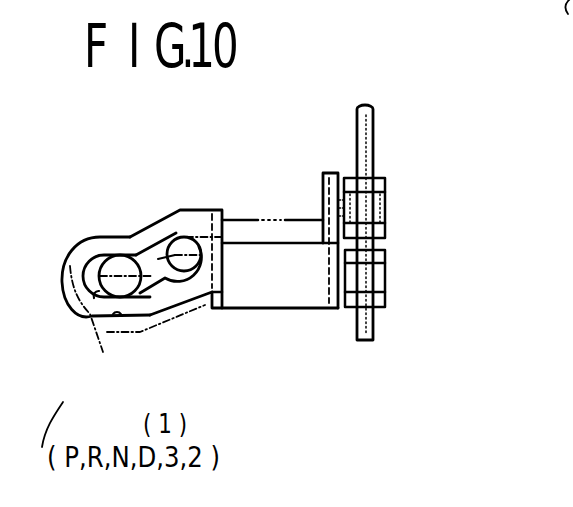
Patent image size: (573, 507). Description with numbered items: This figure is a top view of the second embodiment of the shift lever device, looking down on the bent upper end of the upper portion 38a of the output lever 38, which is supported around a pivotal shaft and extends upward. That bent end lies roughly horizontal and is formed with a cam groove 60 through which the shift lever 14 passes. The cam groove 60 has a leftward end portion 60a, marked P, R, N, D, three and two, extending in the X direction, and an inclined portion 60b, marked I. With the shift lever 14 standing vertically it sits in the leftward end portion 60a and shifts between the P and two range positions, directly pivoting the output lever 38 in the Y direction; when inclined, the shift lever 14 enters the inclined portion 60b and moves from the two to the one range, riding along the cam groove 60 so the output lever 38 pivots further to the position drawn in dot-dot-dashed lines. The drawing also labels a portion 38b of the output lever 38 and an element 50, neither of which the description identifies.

The shift lever 14 is at (172, 254).
The output lever 38 is at (290, 225).
The upper portion of the output lever 38a is at (223, 292).
The loop end of rod 38b is at (98, 236).
The pin 50 is at (365, 135).
The cam groove 60 is at (183, 247).
The leftward end portion of the cam groove 60a is at (97, 297).
The inclined portion of the cam groove 60b is at (155, 262).